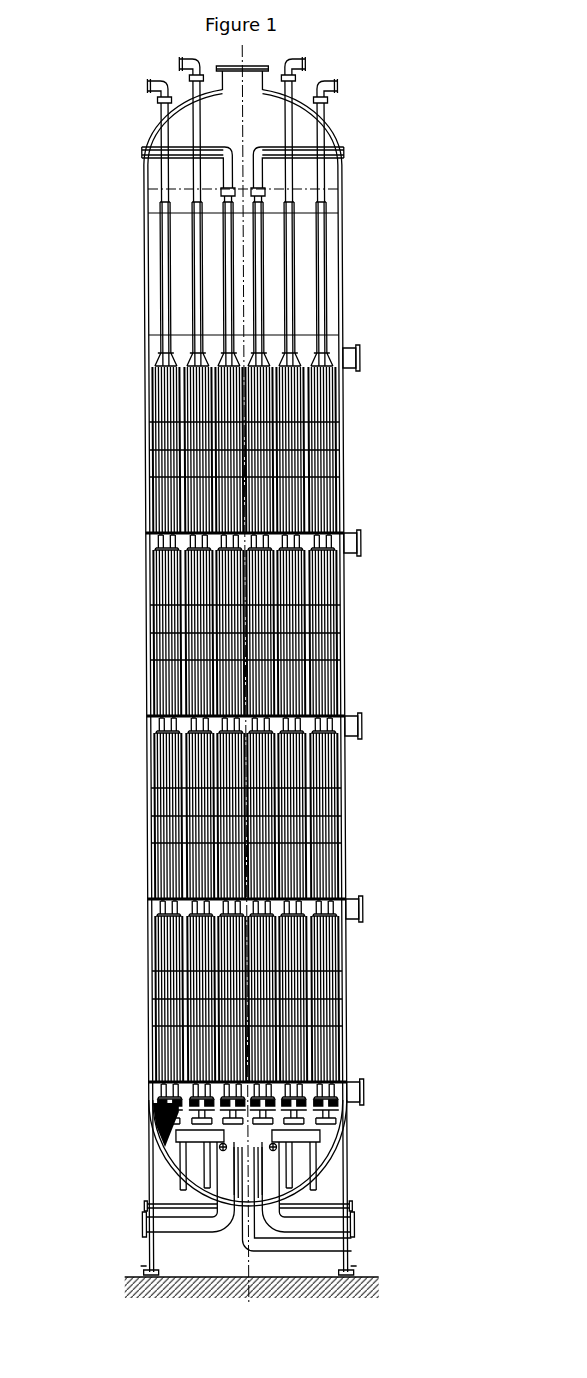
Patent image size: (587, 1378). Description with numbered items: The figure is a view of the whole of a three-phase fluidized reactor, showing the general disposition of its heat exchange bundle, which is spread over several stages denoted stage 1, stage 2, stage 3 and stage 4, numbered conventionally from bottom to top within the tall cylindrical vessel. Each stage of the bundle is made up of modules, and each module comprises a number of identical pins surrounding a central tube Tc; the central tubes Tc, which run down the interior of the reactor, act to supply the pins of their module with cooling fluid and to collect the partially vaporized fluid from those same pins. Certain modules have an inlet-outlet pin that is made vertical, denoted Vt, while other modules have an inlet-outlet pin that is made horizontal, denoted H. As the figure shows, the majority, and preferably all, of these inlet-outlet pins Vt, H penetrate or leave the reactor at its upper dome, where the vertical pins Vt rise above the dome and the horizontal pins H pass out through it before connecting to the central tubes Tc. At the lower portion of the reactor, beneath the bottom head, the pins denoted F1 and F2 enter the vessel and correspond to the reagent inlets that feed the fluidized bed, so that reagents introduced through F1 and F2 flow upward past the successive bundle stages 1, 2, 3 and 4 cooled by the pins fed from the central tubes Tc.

The vertical inlet-outlet pin Vt is at (339, 84).
The horizontal inlet-outlet pin H is at (332, 143).
The central tube Tc is at (264, 266).
The fourth stage 4 is at (109, 358).
The third stage 3 is at (109, 548).
The second stage 2 is at (109, 731).
The first stage 1 is at (109, 914).
The reagent inlet pin F1 is at (172, 1204).
The reagent inlet pin F2 is at (327, 1204).